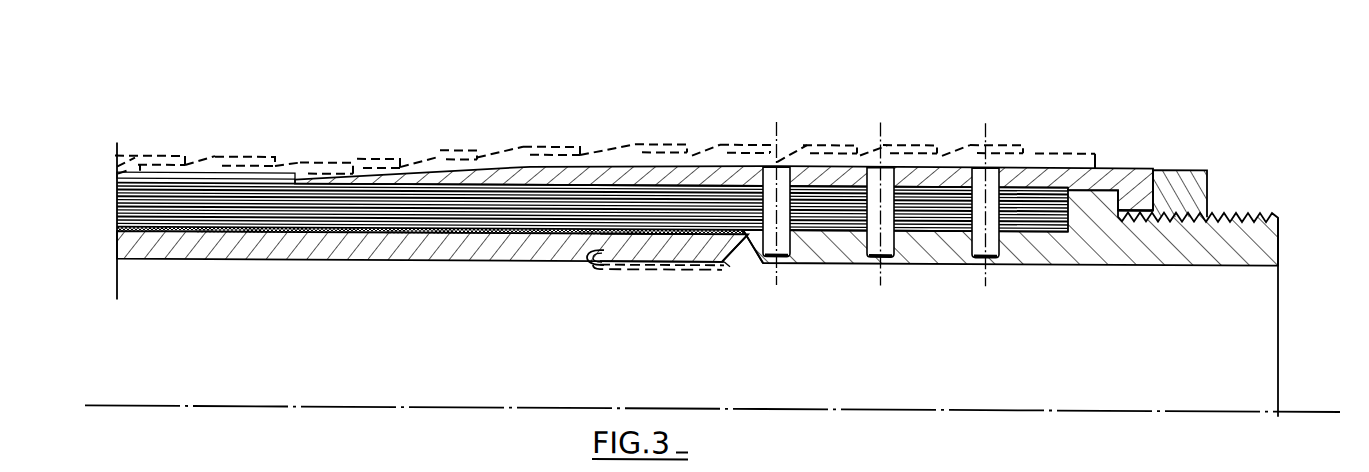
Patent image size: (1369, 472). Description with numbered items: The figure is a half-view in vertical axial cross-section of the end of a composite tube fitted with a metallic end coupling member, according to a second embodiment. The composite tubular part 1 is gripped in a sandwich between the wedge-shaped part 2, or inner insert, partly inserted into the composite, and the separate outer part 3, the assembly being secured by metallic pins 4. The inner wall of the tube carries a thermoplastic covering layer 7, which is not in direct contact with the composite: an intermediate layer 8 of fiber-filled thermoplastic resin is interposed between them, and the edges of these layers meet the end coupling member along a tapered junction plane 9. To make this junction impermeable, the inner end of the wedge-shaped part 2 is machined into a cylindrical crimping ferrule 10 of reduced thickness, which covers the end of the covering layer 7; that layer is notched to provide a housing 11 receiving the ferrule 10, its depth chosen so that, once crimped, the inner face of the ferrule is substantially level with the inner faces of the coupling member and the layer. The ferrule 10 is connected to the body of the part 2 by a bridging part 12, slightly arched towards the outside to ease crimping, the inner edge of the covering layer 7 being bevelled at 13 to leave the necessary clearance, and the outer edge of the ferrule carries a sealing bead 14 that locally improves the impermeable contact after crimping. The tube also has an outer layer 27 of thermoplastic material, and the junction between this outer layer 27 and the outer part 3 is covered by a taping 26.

The composite tubular part 1 is at (707, 199).
The wedge-shaped part 2 is at (932, 247).
The outer part 3 is at (817, 174).
The metallic pins 4 is at (887, 202).
The covering layer 7 is at (392, 241).
The intermediate layer 8 is at (460, 228).
The tapered junction plane 9 is at (645, 242).
The crimping ferrule 10 is at (680, 252).
The housing 11 is at (640, 259).
The bridging part 12 is at (747, 249).
The bevelled inner edge 13 is at (746, 224).
The sealing bead 14 is at (593, 256).
The taping 26 is at (913, 141).
The outer layer 27 is at (190, 177).